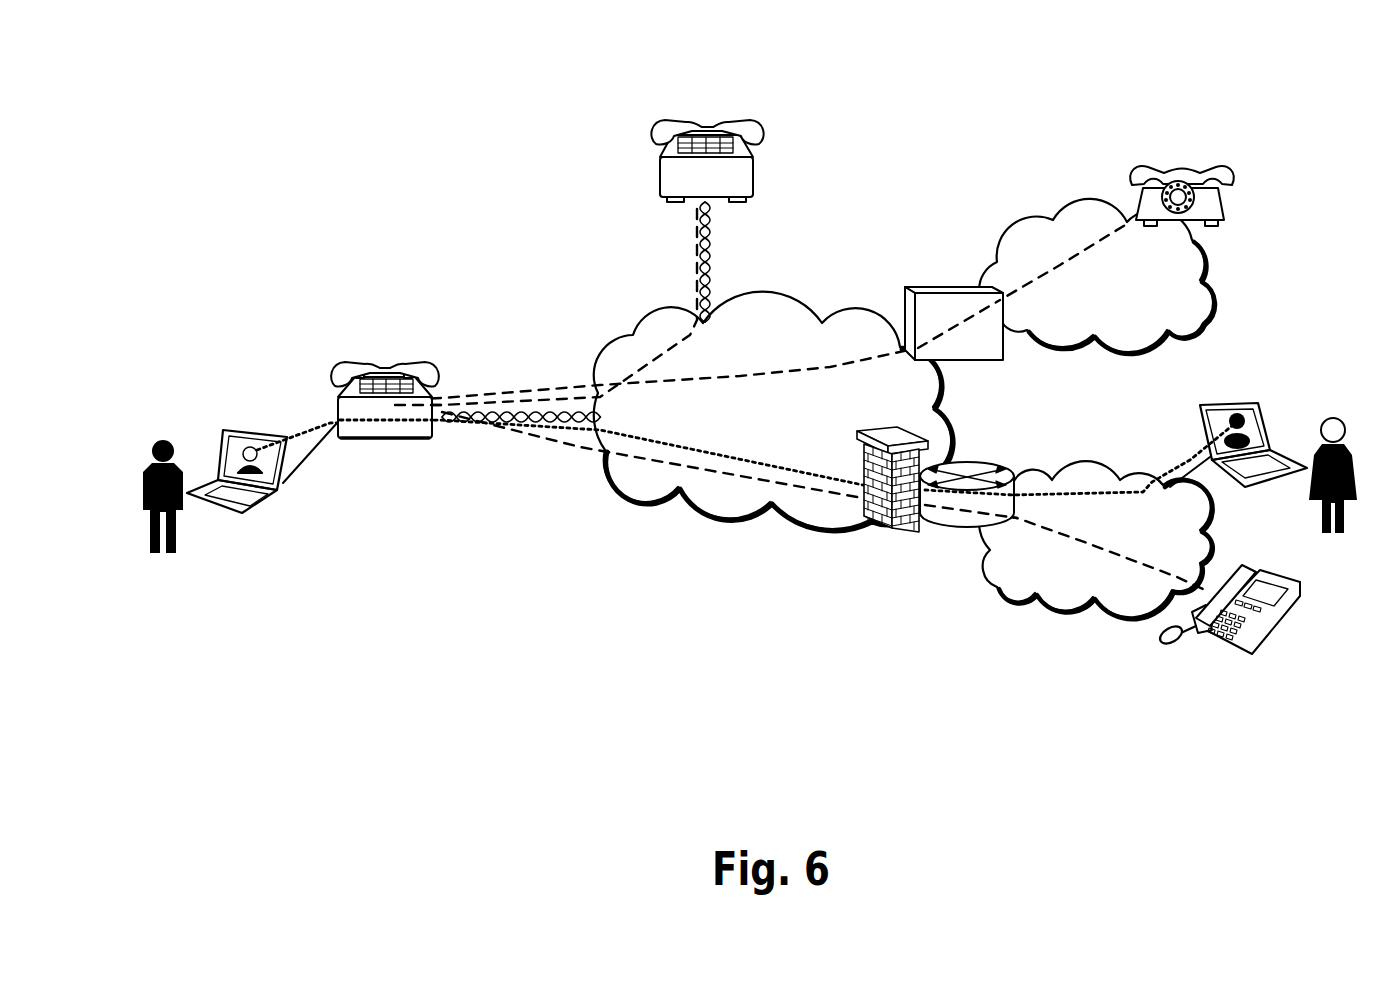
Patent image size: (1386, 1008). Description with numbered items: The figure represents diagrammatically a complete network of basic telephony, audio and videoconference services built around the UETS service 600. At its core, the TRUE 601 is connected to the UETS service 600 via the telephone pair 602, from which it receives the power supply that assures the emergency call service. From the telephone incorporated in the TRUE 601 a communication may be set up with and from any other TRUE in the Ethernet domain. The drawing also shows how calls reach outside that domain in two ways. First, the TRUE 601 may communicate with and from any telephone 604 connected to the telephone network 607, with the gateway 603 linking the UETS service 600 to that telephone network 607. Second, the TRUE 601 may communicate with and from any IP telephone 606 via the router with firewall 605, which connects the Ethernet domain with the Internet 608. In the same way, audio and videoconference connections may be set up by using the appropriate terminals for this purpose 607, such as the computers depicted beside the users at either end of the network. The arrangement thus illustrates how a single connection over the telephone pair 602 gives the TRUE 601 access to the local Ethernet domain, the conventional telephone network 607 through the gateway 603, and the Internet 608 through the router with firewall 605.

The UETS service 600 is at (773, 411).
The TRUE 601 is at (388, 330).
The telephone pair 602 is at (520, 376).
The gateway 603 is at (930, 260).
The telephone 604 is at (1180, 134).
The router with firewall 605 is at (945, 560).
The IP telephone 606 is at (1208, 672).
The telephone network 607 is at (272, 525).
The Internet 608 is at (1096, 540).